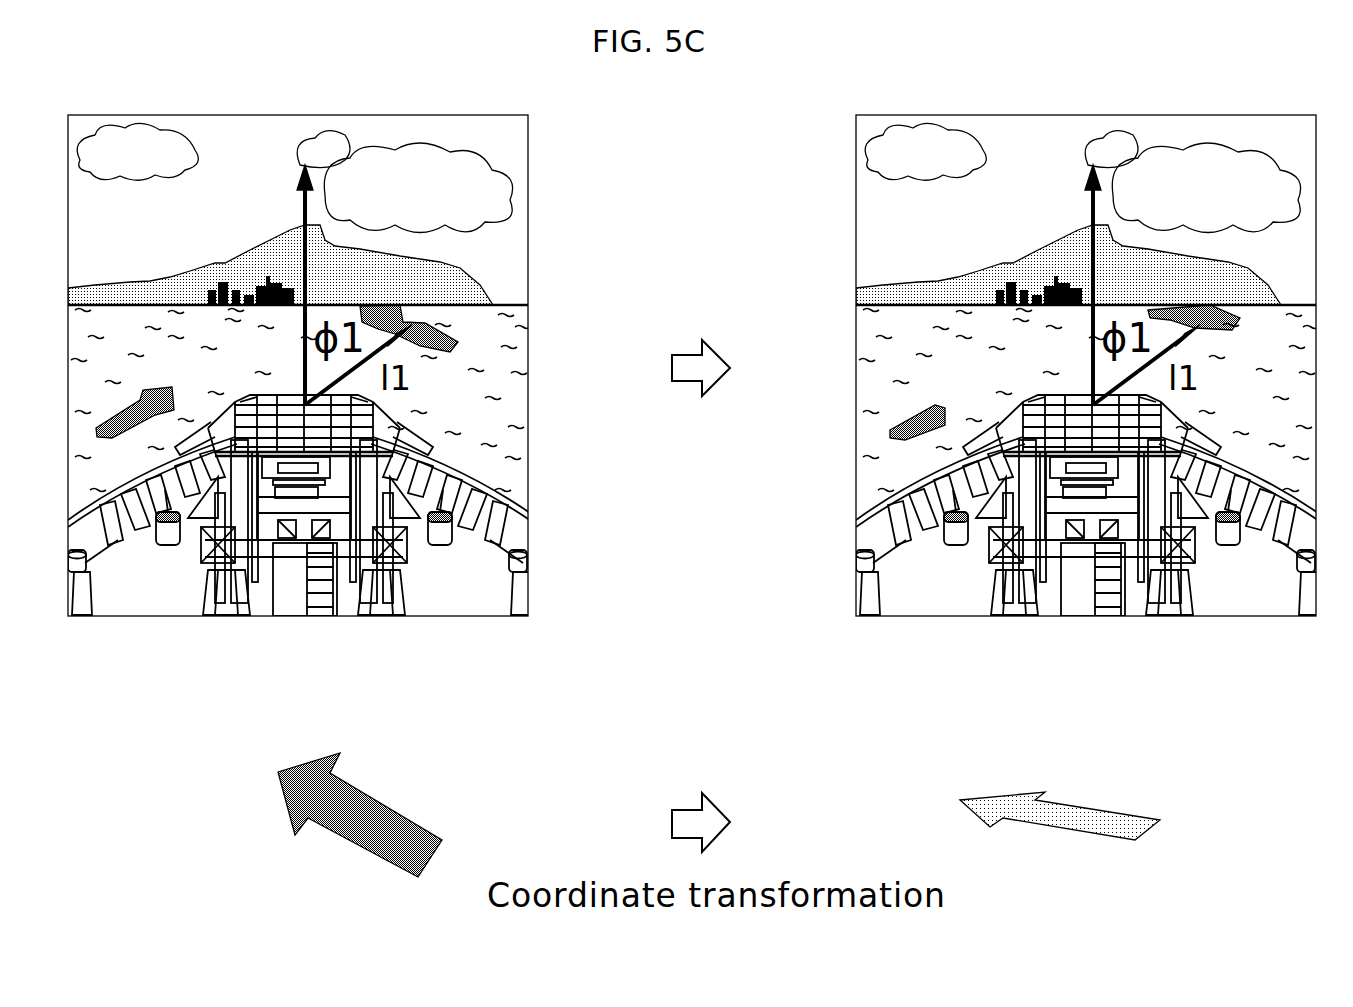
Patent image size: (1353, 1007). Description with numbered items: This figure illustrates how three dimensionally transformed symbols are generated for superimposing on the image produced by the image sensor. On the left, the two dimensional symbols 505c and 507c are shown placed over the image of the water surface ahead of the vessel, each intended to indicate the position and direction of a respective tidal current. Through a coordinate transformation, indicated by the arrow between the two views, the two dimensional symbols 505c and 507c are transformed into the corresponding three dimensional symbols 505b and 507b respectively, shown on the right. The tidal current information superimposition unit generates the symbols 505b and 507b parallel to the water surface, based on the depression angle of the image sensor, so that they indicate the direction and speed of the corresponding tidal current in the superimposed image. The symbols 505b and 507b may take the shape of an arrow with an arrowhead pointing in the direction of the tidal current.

The two dimensional symbol 507c is at (150, 385).
The two dimensional symbol 505c is at (405, 330).
The symbol 507b is at (925, 410).
The symbol 505b is at (1203, 322).